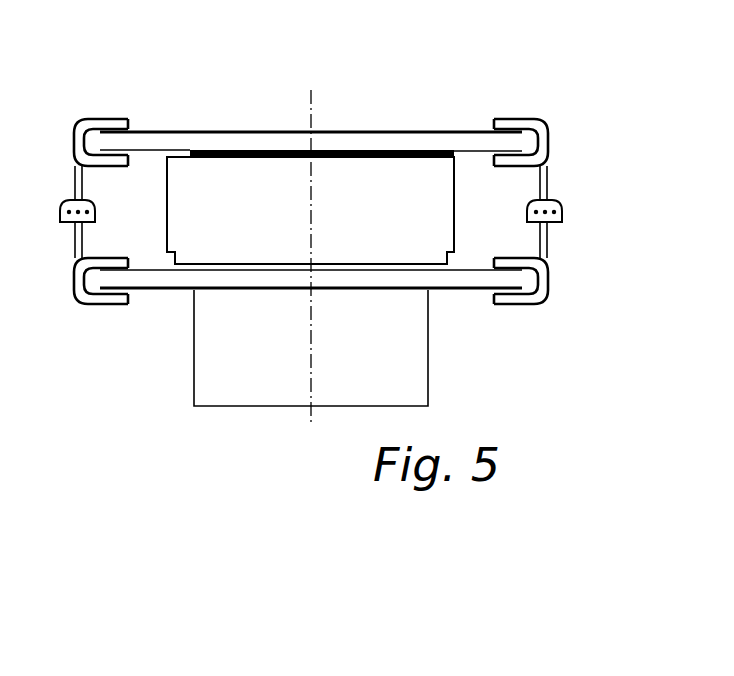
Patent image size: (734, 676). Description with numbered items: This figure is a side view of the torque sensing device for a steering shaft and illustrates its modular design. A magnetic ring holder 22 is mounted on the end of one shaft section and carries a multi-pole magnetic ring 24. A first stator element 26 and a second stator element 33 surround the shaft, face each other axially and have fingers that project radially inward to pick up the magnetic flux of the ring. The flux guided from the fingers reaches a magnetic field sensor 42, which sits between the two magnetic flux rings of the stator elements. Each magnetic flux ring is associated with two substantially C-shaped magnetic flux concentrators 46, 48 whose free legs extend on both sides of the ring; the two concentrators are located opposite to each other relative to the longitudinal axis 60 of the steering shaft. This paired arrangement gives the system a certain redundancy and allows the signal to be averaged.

The magnetic ring holder 22 is at (248, 395).
The multi-pole magnetic ring 24 is at (375, 163).
The first stator element 26 is at (165, 290).
The second stator element 33 is at (184, 130).
The magnetic field sensor 42 is at (62, 222).
The magnetic flux concentrator 46 is at (104, 305).
The magnetic flux concentrator 48 is at (100, 118).
The longitudinal axis 60 is at (310, 92).